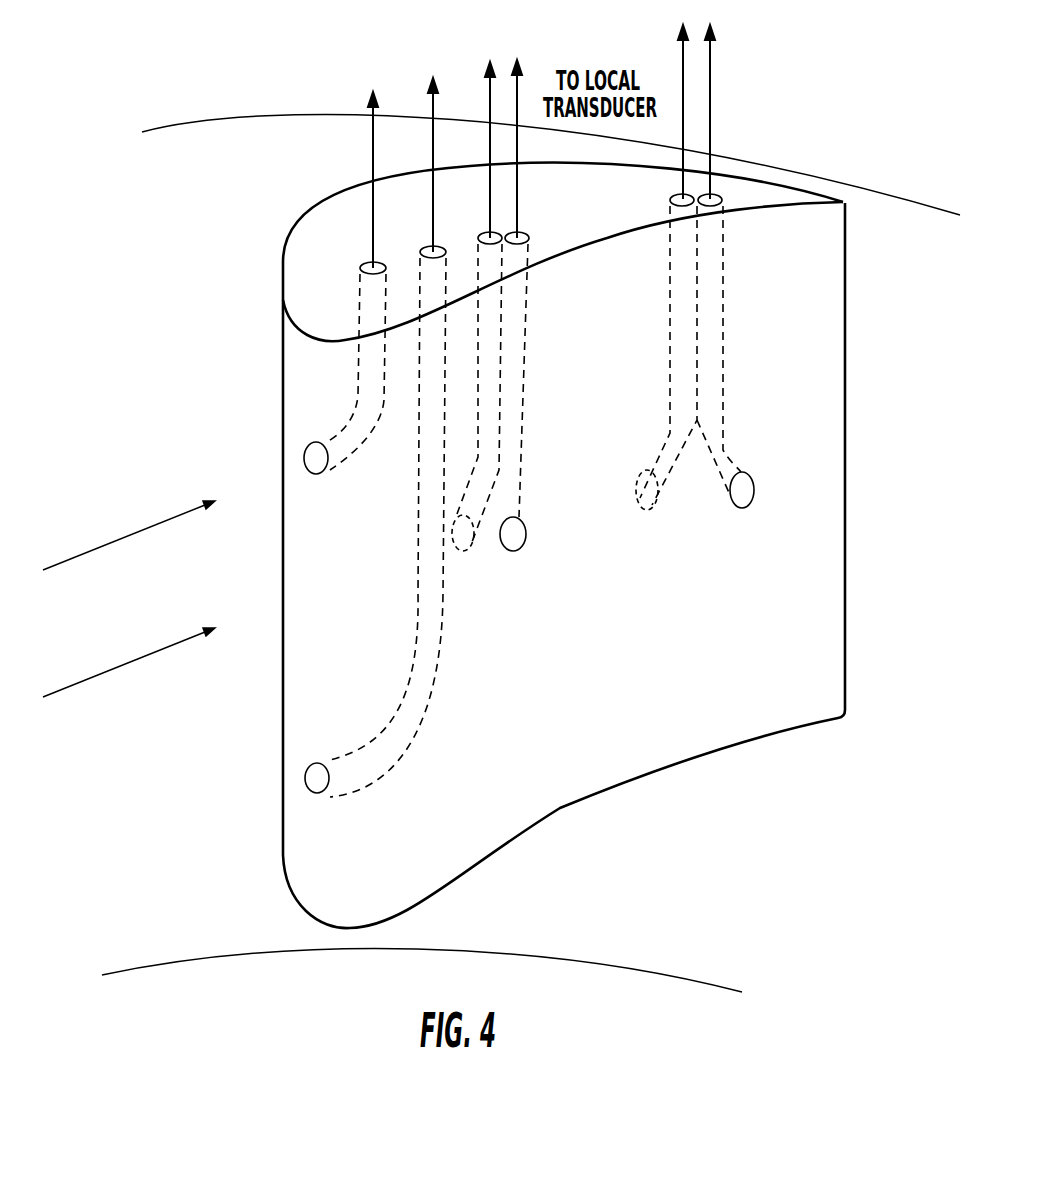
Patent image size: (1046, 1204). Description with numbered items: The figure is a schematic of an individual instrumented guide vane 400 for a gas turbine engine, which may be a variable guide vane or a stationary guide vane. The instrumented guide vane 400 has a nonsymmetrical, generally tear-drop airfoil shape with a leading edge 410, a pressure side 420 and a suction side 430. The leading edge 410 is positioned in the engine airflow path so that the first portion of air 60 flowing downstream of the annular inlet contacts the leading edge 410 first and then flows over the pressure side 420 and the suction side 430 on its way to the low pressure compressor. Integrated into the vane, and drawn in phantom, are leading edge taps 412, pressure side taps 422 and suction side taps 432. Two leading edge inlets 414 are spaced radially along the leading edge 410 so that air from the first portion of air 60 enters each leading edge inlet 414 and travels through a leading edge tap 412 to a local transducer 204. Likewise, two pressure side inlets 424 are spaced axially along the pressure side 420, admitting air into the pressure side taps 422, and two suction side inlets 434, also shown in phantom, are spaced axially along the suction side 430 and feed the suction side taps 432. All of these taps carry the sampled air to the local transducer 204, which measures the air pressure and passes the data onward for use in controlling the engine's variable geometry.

The instrumented guide vane 400 is at (825, 815).
The leading edge 410 is at (272, 709).
The pressure side 420 is at (576, 262).
The suction side 430 is at (484, 155).
The local transducer 204 is at (551, 164).
The leading edge tap 412 is at (362, 463).
The leading edge inlet 414 is at (315, 758).
The pressure side tap 422 is at (690, 366).
The suction side tap 432 is at (503, 447).
The pressure side inlet 424 is at (741, 518).
The suction side inlet 434 is at (634, 528).
The first portion of air 60 is at (60, 666).